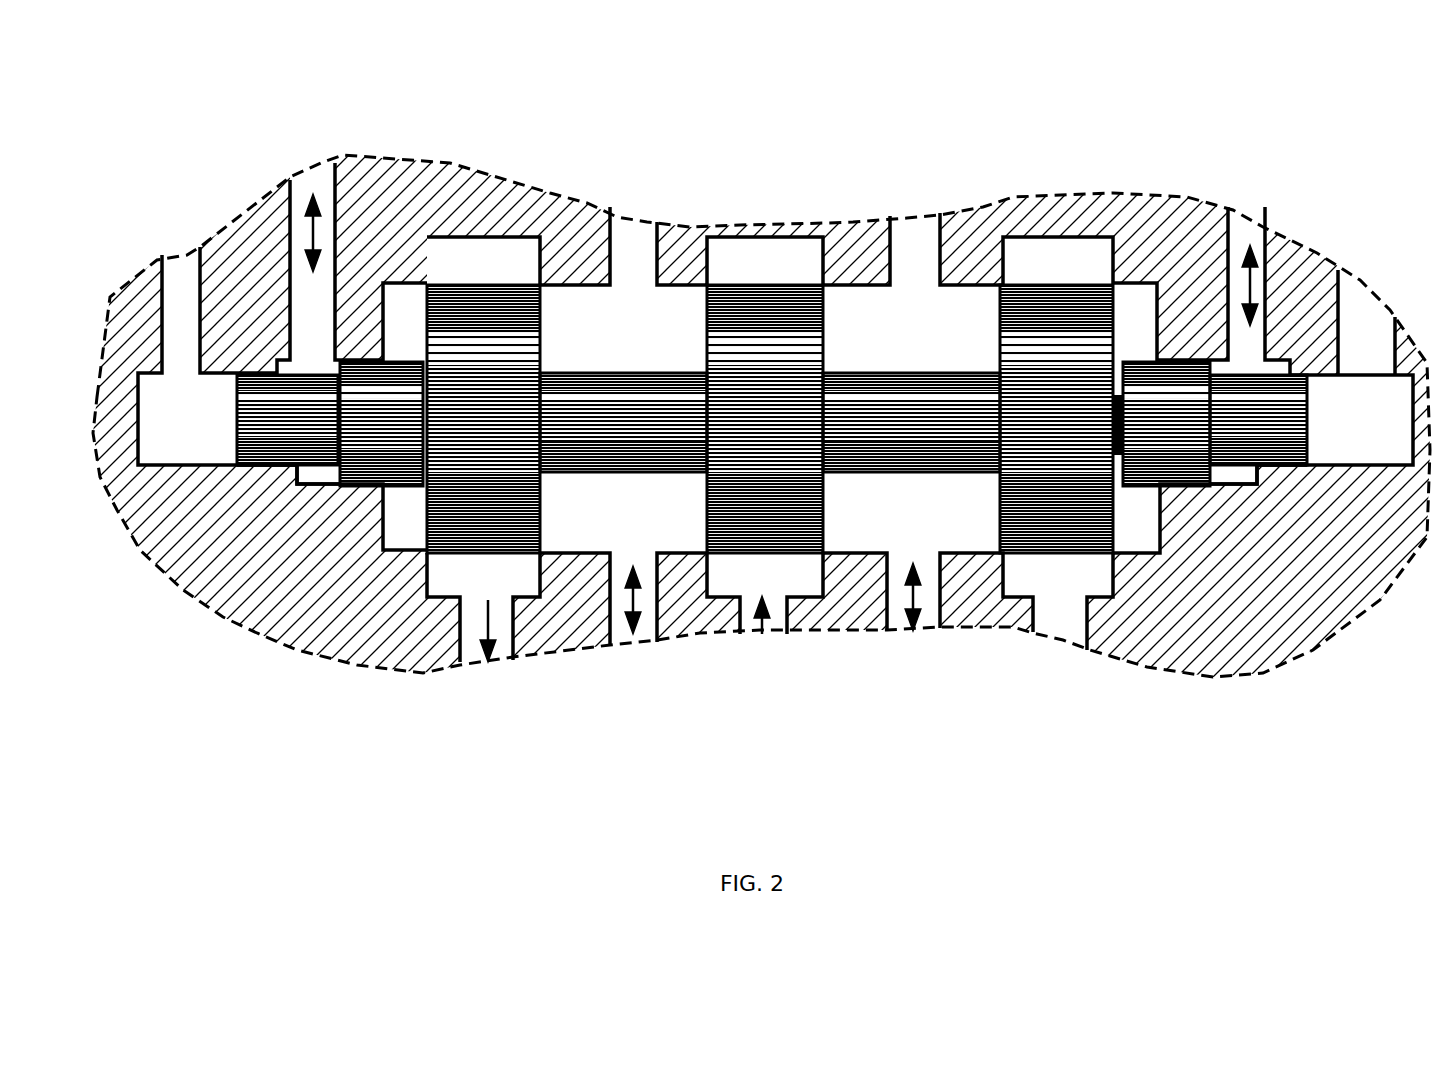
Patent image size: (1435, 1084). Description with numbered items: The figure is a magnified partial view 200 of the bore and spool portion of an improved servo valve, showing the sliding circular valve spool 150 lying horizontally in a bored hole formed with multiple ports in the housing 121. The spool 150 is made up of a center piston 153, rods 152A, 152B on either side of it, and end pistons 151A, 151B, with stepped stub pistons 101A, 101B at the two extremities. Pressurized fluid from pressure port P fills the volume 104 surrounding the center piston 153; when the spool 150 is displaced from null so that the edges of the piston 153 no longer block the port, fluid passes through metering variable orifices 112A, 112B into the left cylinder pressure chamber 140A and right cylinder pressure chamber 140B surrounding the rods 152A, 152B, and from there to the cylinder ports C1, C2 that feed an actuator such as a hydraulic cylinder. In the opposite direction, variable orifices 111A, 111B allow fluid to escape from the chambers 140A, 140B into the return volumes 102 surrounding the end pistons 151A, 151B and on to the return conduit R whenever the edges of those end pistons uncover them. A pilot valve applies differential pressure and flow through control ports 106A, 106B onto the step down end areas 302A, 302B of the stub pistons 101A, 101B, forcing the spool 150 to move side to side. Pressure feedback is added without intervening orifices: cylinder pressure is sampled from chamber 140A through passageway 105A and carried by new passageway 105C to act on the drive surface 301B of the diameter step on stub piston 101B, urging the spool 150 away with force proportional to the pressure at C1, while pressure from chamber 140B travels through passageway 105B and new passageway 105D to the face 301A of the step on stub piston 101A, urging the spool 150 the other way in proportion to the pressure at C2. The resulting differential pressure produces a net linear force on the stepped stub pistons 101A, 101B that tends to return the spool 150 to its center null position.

The sliding circular valve spool 150 is at (685, 332).
The magnified partial view 200 is at (1127, 193).
The passageway 105A is at (632, 230).
The passageway 105B is at (912, 233).
The new passageway 105C is at (1264, 275).
The new passageway 105D is at (313, 252).
The housing 121 is at (380, 210).
The return port 102 is at (464, 275).
The passageway 104 is at (739, 273).
The left cylinder pressure chamber 140A is at (587, 361).
The right cylinder pressure chamber 140B is at (877, 363).
The control port 106A is at (153, 435).
The control port 106B is at (1323, 435).
The stub piston 101A is at (306, 435).
The stub piston 101B is at (1183, 433).
The end piston 151A is at (454, 436).
The end piston 151B is at (1027, 443).
The rod 152A is at (587, 438).
The rod 152B is at (883, 438).
The center piston 153 is at (740, 438).
The step down end area 302A is at (230, 450).
The step down end area 302B is at (1310, 450).
The new face 301A is at (297, 484).
The new drive surface 301B is at (1213, 477).
The metering variable orifice 111A is at (547, 556).
The metering variable orifice 111B is at (993, 548).
The metering variable orifice 112A is at (700, 556).
The metering variable orifice 112B is at (827, 548).
The return conduit R is at (488, 651).
The pressure port P is at (762, 632).
The cylinder port C1 is at (629, 621).
The cylinder port C2 is at (912, 610).